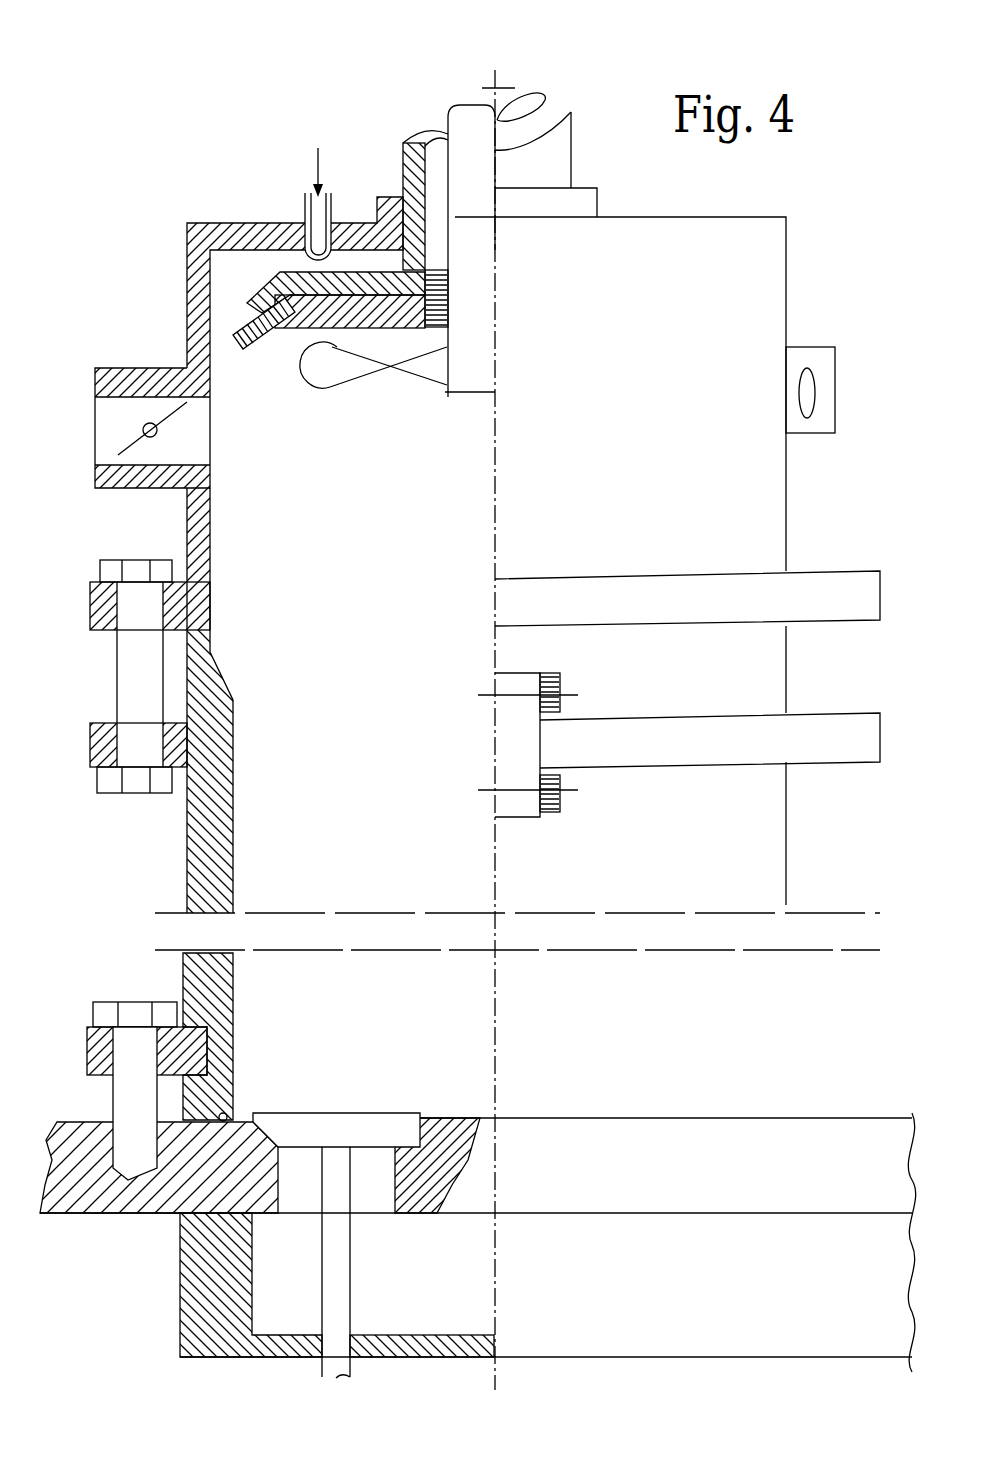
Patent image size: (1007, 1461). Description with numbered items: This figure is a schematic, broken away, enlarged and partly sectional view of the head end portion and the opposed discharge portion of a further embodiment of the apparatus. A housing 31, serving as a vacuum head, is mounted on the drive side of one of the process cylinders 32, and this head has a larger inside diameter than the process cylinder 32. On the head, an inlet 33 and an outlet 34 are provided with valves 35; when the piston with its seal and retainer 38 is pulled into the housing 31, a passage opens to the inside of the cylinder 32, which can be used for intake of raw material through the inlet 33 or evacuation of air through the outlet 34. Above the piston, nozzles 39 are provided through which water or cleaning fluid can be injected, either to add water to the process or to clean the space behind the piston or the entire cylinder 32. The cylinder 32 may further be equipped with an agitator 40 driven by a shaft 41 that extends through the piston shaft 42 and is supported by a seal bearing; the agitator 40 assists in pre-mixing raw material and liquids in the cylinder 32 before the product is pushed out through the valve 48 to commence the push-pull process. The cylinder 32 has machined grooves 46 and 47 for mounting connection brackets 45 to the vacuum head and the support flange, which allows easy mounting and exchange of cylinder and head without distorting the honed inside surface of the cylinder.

The housing 31 is at (762, 510).
The process cylinder 32 is at (745, 848).
The inlet 33 is at (110, 427).
The outlet 34 is at (830, 375).
The valve 35 is at (805, 348).
The retainer 38 is at (295, 330).
The nozzle 39 is at (305, 222).
The agitator 40 is at (352, 376).
The shaft 41 is at (472, 127).
The piston shaft 42 is at (570, 152).
The connection bracket 45 is at (220, 706).
The machined groove 46 is at (208, 748).
The machined groove 47 is at (208, 1045).
The valve 48 is at (347, 1110).